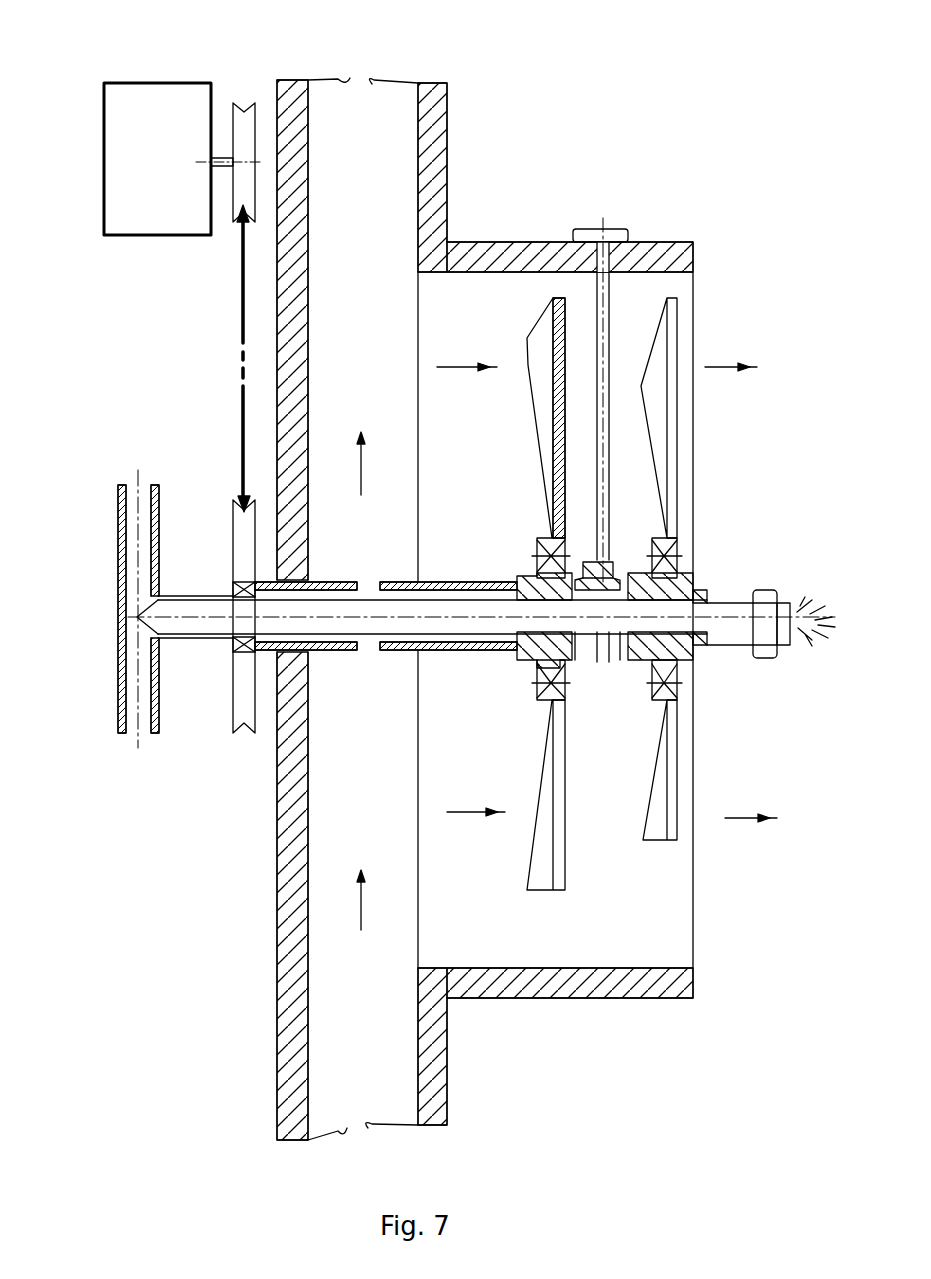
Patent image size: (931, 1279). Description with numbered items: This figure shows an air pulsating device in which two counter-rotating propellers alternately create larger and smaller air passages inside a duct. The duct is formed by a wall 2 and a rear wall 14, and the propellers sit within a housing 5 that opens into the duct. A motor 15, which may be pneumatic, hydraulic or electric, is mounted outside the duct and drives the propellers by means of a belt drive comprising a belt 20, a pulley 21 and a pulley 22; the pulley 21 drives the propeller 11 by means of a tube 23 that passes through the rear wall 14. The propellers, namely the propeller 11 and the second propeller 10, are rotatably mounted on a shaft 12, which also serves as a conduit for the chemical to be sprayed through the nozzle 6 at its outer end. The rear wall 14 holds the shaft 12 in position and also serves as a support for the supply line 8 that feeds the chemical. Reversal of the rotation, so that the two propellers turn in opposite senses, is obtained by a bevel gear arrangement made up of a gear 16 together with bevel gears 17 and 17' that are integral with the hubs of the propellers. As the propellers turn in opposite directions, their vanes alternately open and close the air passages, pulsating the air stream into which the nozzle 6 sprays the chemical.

The duct wall 2 is at (432, 1065).
The housing 5 is at (636, 993).
The nozzle 6 is at (765, 656).
The supply line 8 is at (116, 698).
The blade 10 is at (660, 375).
The propeller 11 is at (540, 380).
The shaft 12 is at (596, 642).
The rear wall 14 is at (293, 1057).
The motor 15 is at (152, 92).
The gear 16 is at (612, 563).
The bevel gear 17 is at (662, 669).
The bevel gear 17' is at (567, 694).
The belt drive 20 is at (240, 412).
The pulley 21 is at (243, 700).
The pulley 22 is at (245, 122).
The tube 23 is at (480, 583).